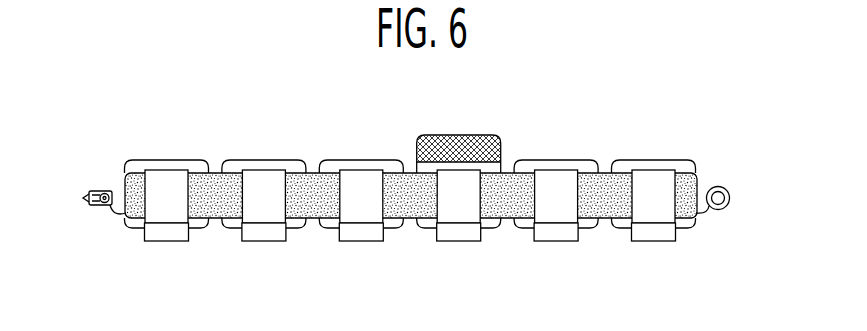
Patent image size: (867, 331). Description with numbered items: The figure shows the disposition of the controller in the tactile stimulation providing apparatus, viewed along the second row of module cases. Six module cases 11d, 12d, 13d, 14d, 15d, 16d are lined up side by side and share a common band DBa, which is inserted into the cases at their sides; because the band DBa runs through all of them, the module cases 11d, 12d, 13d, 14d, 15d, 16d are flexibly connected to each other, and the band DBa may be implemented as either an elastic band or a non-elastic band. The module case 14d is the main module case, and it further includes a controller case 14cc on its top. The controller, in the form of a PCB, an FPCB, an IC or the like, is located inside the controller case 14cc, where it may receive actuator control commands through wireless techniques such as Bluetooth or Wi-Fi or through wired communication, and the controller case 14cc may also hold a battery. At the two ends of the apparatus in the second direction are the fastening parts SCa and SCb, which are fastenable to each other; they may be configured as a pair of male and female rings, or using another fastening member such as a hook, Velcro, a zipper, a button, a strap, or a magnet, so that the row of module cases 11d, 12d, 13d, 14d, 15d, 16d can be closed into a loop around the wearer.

The module case 11d is at (174, 213).
The module case 12d is at (271, 213).
The module case 13d is at (368, 213).
The module case 14d is at (466, 213).
The module case 15d is at (563, 213).
The module case 16d is at (660, 213).
The controller case 14cc is at (452, 140).
The band DBa is at (603, 178).
The fastening part SCa is at (97, 190).
The fastening part SCb is at (728, 183).